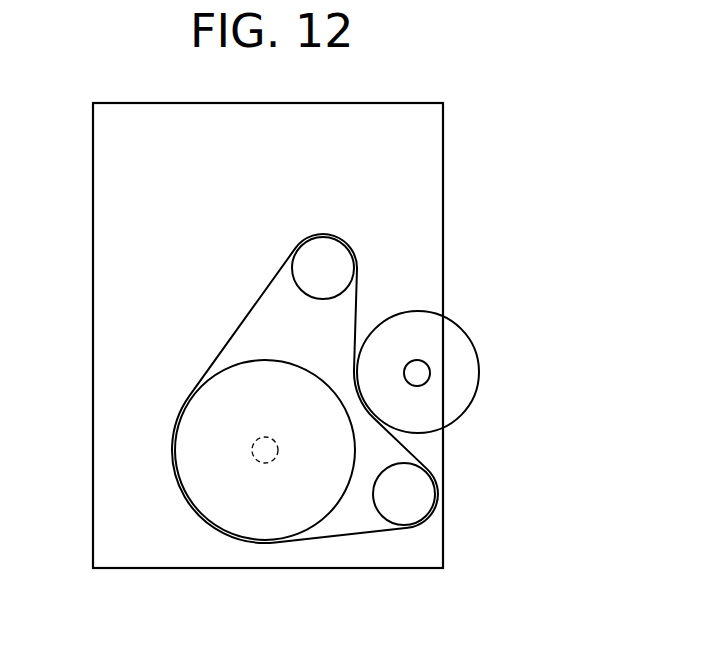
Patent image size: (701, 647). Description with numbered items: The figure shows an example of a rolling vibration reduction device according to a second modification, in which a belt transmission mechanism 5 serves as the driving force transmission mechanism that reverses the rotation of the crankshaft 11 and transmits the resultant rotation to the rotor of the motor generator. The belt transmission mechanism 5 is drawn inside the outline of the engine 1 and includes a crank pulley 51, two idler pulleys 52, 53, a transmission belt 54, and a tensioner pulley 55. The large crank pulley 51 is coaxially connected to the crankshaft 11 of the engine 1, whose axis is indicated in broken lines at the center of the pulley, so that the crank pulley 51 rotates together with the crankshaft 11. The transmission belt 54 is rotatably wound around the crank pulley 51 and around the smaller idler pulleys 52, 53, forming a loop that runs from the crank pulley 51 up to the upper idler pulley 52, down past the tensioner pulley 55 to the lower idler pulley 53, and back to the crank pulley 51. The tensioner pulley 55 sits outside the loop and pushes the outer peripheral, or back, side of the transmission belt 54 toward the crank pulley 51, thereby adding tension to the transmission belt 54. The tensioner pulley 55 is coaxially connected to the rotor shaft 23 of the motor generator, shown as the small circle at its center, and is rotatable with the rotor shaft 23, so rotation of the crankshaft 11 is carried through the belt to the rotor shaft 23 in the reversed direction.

The engine 1 is at (401, 103).
The belt transmission mechanism 5 is at (289, 217).
The crankshaft 11 is at (252, 445).
The rotor shaft 23 is at (430, 372).
The crank pulley 51 is at (238, 543).
The idler pulley 52 is at (294, 286).
The idler pulley 53 is at (437, 495).
The transmission belt 54 is at (243, 321).
The tensioner pulley 55 is at (461, 328).